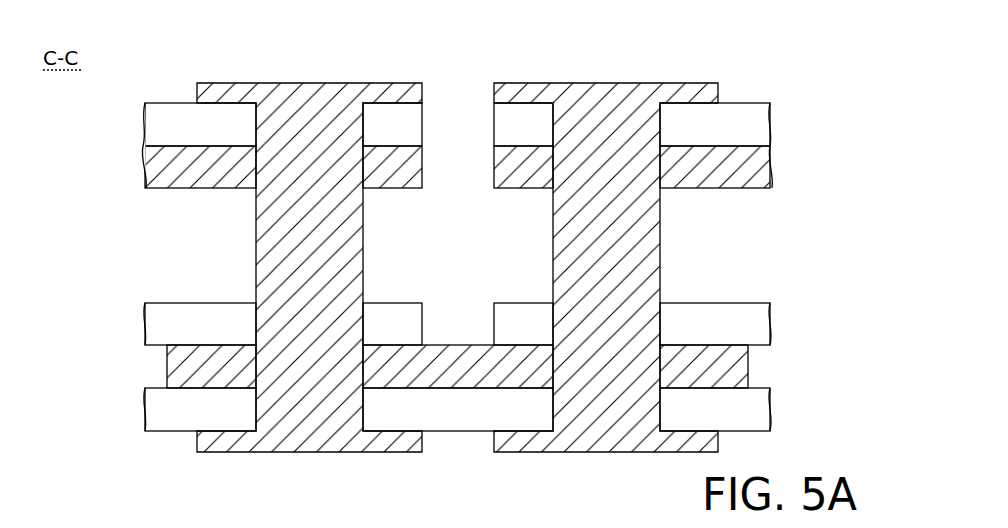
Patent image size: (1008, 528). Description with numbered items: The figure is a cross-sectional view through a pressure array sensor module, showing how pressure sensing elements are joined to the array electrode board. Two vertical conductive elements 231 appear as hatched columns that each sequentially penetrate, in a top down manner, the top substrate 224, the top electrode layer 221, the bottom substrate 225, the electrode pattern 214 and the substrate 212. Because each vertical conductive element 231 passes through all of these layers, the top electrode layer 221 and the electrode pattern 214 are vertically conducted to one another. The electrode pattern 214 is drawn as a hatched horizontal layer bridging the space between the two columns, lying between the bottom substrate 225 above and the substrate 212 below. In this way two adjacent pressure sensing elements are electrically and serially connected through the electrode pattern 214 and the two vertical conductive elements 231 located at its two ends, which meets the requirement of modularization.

The vertical conductive element 231 is at (307, 420).
The electrode pattern 214 is at (455, 367).
The top substrate 224 is at (752, 124).
The top electrode layer 221 is at (750, 167).
The bottom substrate 225 is at (750, 323).
The substrate 212 is at (750, 410).